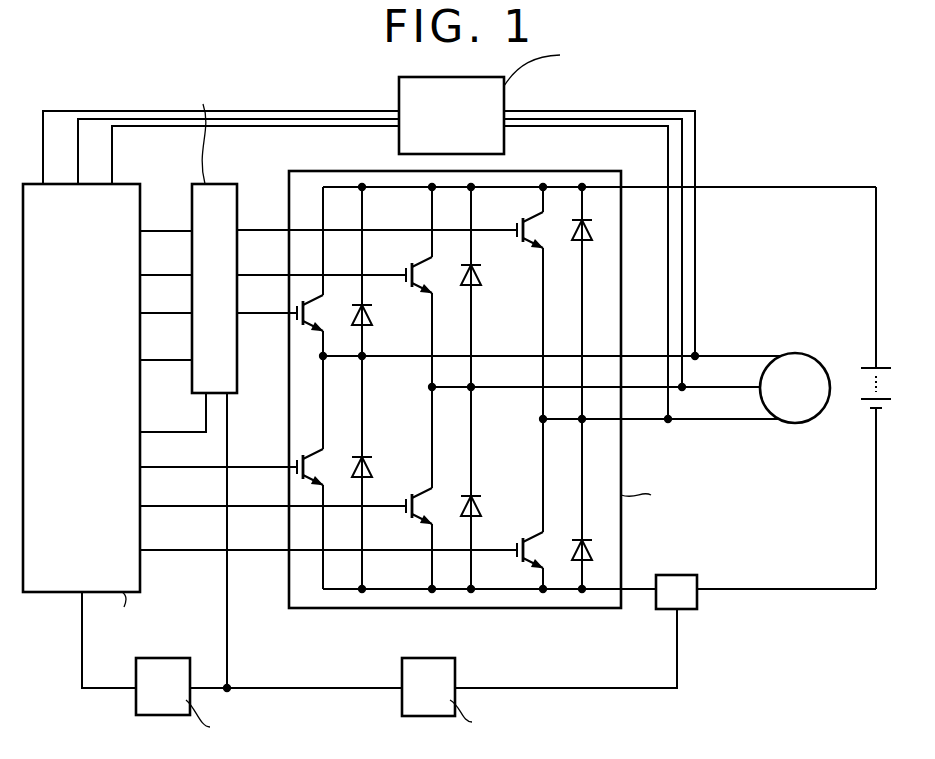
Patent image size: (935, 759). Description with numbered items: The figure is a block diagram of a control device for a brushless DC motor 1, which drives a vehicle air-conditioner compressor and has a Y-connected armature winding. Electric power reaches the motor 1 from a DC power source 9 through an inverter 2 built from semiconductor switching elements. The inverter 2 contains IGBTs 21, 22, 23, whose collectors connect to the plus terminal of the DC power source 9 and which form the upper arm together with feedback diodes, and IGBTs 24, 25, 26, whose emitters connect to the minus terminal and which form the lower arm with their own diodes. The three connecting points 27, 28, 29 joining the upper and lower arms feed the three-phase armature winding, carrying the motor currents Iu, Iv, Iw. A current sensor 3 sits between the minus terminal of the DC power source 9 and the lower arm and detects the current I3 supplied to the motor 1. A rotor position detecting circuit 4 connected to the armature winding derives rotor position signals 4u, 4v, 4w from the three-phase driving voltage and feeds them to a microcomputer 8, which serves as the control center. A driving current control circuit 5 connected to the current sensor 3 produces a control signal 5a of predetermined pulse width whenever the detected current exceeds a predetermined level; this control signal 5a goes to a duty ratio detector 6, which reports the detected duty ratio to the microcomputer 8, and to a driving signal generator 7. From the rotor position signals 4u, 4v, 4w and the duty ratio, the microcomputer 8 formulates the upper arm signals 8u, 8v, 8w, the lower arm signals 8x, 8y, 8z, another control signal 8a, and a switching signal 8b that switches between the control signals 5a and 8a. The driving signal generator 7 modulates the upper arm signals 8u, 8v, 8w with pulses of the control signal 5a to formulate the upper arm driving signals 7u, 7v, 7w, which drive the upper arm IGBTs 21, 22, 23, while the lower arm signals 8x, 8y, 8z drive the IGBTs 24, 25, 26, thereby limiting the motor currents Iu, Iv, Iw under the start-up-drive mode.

The brushless DC motor 1 is at (807, 413).
The inverter 2 is at (618, 173).
The current sensor 3 is at (690, 604).
The rotor position detecting circuit 4 is at (504, 100).
The rotor position signal 4u is at (356, 235).
The rotor position signal 4v is at (367, 255).
The rotor position signal 4w is at (377, 274).
The driving current control circuit 5 is at (427, 658).
The control signal 5a is at (296, 676).
The duty ratio detector 6 is at (157, 715).
The driving signal generator 7 is at (220, 186).
The upper arm driving signal 7u is at (267, 299).
The upper arm driving signal 7v is at (321, 261).
The upper arm driving signal 7w is at (377, 216).
The microcomputer 8 is at (55, 592).
The upper arm signal 8w is at (166, 217).
The upper arm signal 8v is at (166, 261).
The upper arm signal 8u is at (166, 299).
The switching signal 8b is at (166, 346).
The control signal 8a is at (173, 413).
The lower arm signal 8x is at (218, 453).
The lower arm signal 8y is at (273, 491).
The lower arm signal 8z is at (328, 535).
The DC power source 9 is at (868, 367).
The IGBT 21 is at (321, 313).
The IGBT 22 is at (430, 275).
The IGBT 23 is at (541, 230).
The IGBT 24 is at (321, 467).
The IGBT 25 is at (430, 506).
The IGBT 26 is at (541, 550).
The U phase output node 27 is at (329, 361).
The V phase output node 28 is at (437, 392).
The W phase output node 29 is at (548, 424).
The motor current Iu is at (697, 346).
The motor current Iv is at (697, 378).
The motor current Iw is at (697, 409).
The current detected by the current sensor I3 is at (712, 572).